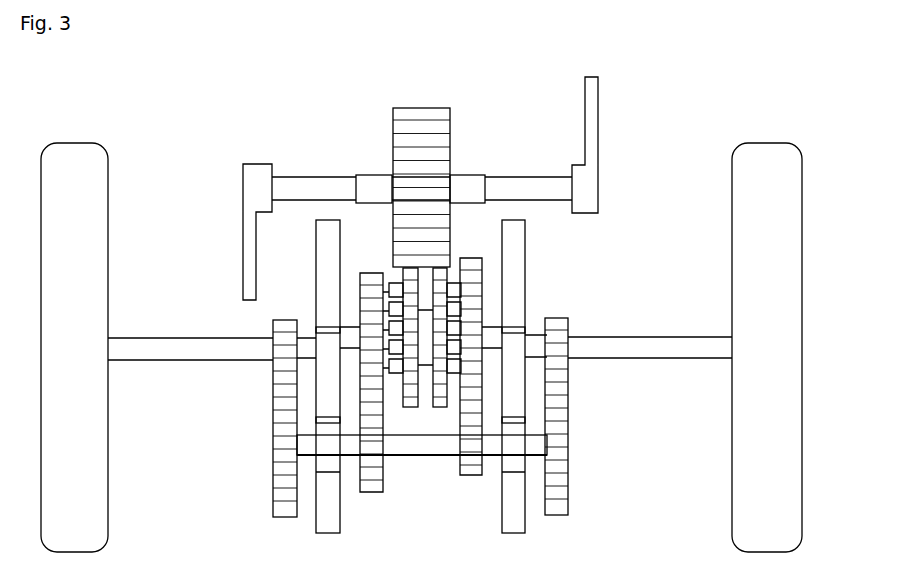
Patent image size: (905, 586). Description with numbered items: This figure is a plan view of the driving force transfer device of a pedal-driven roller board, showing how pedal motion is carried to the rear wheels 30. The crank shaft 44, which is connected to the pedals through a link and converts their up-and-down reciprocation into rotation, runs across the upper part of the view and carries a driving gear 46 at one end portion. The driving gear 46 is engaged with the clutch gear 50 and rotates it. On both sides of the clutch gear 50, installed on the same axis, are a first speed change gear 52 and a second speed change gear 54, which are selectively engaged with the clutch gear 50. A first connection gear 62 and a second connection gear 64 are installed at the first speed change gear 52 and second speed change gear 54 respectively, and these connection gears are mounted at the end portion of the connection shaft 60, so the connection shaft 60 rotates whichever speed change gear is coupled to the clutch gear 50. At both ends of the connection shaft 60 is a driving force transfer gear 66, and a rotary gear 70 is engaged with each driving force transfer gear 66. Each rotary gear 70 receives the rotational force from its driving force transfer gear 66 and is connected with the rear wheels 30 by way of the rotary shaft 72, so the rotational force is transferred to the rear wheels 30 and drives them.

The rear wheel 30 is at (737, 253).
The crank shaft 44 is at (521, 177).
The driving gear 46 is at (418, 108).
The clutch gear 50 is at (448, 277).
The first speed change gear 52 is at (375, 274).
The second speed change gear 54 is at (484, 282).
The connection shaft 60 is at (428, 455).
The first connection gear 62 is at (371, 493).
The second connection gear 64 is at (472, 478).
The driving force transfer gear 66 is at (272, 488).
The rotary gear 70 is at (557, 318).
The rotary shaft 72 is at (675, 355).